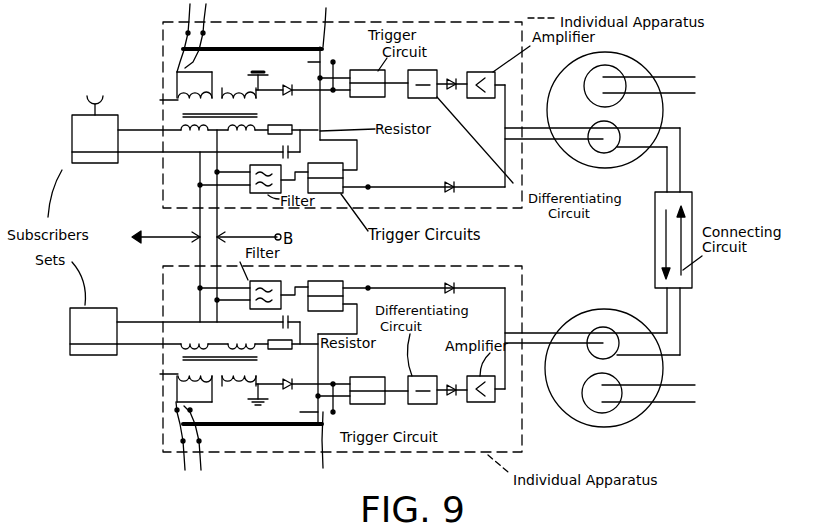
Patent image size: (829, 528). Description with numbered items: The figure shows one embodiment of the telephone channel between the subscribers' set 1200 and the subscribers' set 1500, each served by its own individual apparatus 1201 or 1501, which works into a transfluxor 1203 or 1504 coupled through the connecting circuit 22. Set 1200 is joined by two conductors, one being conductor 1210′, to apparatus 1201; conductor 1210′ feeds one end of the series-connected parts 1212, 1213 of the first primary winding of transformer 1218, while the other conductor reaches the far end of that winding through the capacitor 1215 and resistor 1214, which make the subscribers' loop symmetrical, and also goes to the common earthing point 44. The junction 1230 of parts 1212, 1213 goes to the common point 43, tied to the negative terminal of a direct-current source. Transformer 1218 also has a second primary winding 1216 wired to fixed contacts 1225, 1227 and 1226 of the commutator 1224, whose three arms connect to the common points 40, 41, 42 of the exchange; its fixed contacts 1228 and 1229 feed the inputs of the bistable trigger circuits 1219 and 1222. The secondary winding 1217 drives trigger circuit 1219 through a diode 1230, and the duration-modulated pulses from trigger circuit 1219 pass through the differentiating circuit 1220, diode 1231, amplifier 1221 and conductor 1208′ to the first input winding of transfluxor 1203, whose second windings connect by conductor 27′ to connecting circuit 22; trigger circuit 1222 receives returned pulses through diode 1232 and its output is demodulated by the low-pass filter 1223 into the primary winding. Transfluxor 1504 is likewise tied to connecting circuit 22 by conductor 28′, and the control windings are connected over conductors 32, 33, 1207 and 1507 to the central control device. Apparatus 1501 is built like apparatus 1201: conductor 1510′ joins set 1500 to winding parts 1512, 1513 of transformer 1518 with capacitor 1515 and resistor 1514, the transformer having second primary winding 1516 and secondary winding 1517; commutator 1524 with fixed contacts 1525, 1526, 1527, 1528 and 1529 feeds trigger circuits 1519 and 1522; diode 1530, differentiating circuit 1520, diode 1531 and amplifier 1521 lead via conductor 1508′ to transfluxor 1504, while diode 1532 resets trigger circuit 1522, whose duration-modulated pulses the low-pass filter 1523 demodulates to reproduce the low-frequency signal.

The connecting circuit 22 is at (655, 239).
The conductor 27′ is at (665, 182).
The conductor 28′ is at (695, 321).
The conductor 32 is at (681, 77).
The conductor 33 is at (675, 385).
The common point 40 is at (187, 12).
The common point 41 is at (208, 245).
The common point 42 is at (337, 245).
The common point 43 is at (249, 230).
The common earthing point 44 is at (166, 246).
The subscribers' set 1200 is at (95, 129).
The individual apparatus 1201 is at (520, 42).
The transfluxor 1203 is at (635, 58).
The conductor 1207 is at (649, 124).
The conductor 1208′ is at (543, 167).
The conductor 1210′ is at (122, 128).
The part of first primary winding 1212 is at (178, 133).
The part of first primary winding 1213 is at (245, 139).
The resistor 1214 is at (294, 121).
The capacitor 1215 is at (291, 157).
The second primary winding 1216 is at (169, 87).
The secondary winding 1217 is at (240, 81).
The transformer 1218 is at (158, 118).
The bistable trigger circuit 1219 is at (364, 95).
The differentiating circuit 1220 is at (422, 95).
The amplifier 1221 is at (482, 96).
The second bistable trigger circuit 1222 is at (358, 163).
The low-pass filter 1223 is at (250, 187).
The commutator 1224 is at (283, 45).
The fixed contact 1225 is at (181, 47).
The fixed contact 1226 is at (185, 64).
The fixed contact 1227 is at (236, 57).
The fixed contact 1228 is at (296, 62).
The fixed contact 1229 is at (334, 62).
The junction (and diode) 1230 is at (239, 119).
The diode 1231 is at (451, 77).
The diode 1232 is at (452, 176).
The subscribers' set 1500 is at (93, 331).
The individual apparatus 1501 is at (507, 450).
The transfluxor 1504 is at (618, 428).
The conductor 1507 is at (641, 379).
The conductor 1508′ is at (538, 373).
The conductor 1510′ is at (183, 358).
The part of first primary winding 1512 is at (149, 334).
The part of first primary winding 1513 is at (248, 336).
The resistor 1514 is at (291, 356).
The capacitor 1515 is at (291, 318).
The second primary winding 1516 is at (177, 390).
The secondary winding 1517 is at (240, 390).
The transformer 1518 is at (177, 374).
The bistable trigger circuit 1519 is at (371, 381).
The differentiating circuit 1520 is at (424, 381).
The amplifier 1521 is at (482, 380).
The bistable trigger circuit 1522 is at (322, 281).
The low-pass filter 1523 is at (273, 287).
The commutator 1524 is at (283, 446).
The fixed contact 1525 is at (177, 412).
The fixed contact 1526 is at (190, 412).
The fixed contact 1527 is at (200, 410).
The fixed contact 1528 is at (290, 412).
The fixed contact 1529 is at (333, 413).
The junction (and diode) 1530 is at (253, 356).
The diode 1531 is at (451, 407).
The diode 1532 is at (455, 288).